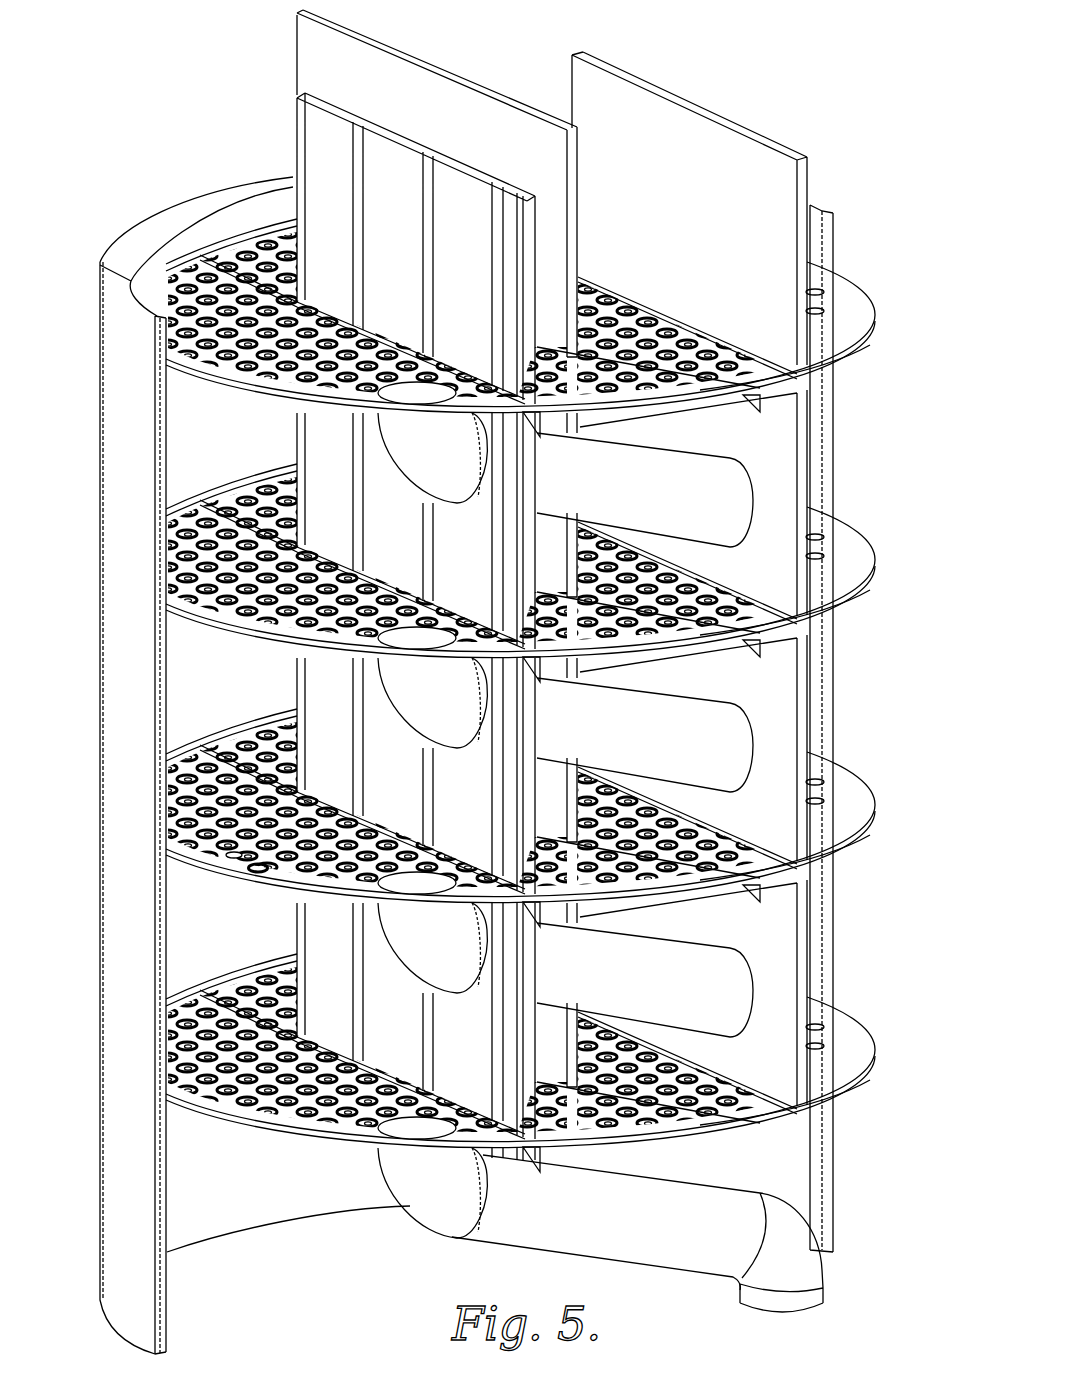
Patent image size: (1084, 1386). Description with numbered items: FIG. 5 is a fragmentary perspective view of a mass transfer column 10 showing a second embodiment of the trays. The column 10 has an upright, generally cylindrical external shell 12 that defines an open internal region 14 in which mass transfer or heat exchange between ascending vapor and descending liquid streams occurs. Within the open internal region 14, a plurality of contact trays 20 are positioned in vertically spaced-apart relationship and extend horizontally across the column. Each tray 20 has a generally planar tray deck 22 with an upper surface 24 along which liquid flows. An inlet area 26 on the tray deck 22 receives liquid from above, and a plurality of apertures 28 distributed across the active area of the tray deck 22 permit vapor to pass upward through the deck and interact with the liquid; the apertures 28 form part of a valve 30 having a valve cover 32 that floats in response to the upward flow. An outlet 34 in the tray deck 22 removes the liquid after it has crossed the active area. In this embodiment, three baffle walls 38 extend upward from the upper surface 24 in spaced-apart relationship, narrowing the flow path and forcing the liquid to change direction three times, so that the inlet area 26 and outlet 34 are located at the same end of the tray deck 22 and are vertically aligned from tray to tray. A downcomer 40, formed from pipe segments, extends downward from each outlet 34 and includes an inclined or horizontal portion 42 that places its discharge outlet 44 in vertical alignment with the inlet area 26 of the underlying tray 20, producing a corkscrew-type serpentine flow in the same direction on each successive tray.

The mass transfer column 10 is at (97, 322).
The external shell 12 is at (128, 236).
The open internal region 14 is at (240, 214).
The contact tray 20 is at (848, 297).
The tray deck 22 is at (843, 318).
The upper surface 24 is at (838, 327).
The inlet area 26 is at (818, 347).
The apertures 28 is at (229, 862).
The valve 30 is at (181, 842).
The valve cover 32 is at (256, 872).
The outlet 34 is at (432, 392).
The baffle walls 38 is at (437, 117).
The downcomer 40 is at (424, 466).
The inclined or horizontal portion 42 is at (669, 499).
The discharge outlet 44 is at (798, 1312).